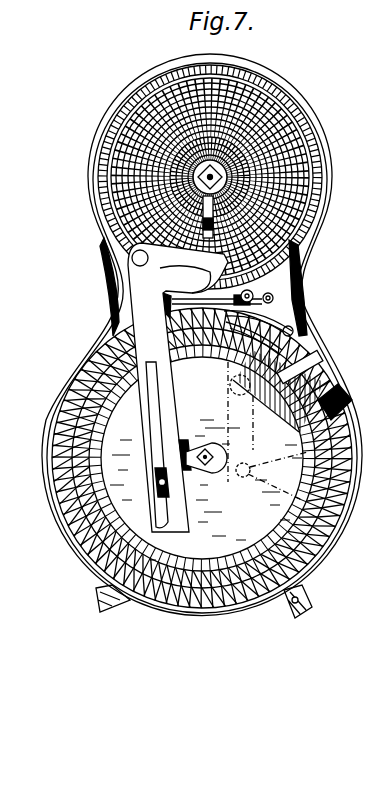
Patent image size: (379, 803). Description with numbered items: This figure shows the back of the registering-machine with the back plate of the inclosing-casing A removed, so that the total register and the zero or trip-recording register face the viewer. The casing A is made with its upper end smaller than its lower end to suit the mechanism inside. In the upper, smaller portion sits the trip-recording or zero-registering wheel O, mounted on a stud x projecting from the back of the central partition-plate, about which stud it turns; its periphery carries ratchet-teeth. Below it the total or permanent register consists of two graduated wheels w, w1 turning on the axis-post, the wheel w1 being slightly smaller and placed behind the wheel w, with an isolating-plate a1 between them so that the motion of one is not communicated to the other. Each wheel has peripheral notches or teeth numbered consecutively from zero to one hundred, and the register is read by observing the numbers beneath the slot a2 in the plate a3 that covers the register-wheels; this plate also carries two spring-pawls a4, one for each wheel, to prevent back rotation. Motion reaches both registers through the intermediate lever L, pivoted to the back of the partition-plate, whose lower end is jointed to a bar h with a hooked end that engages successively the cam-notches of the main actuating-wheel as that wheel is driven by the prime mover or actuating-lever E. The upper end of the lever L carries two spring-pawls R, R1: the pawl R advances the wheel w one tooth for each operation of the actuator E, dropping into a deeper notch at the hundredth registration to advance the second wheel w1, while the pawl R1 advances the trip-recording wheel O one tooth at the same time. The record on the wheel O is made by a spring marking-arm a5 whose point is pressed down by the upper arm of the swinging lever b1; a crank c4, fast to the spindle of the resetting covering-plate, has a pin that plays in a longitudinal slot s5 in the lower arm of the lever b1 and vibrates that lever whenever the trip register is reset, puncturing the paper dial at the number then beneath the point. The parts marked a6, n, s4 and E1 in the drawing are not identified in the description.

The trip-recording wheel O is at (202, 335).
The inclosing-casing A is at (202, 338).
The toothed ring a6 is at (205, 200).
The stud x is at (210, 177).
The graduated wheel w is at (201, 457).
The graduated wheel w1 is at (202, 458).
The slot a2 is at (276, 390).
The isolating-plate a1 is at (346, 402).
The pin n is at (313, 394).
The plate a3 is at (300, 355).
The intermediate lever L is at (240, 422).
The bar h is at (272, 476).
The spring-pawl R is at (157, 289).
The spring-pawl R1 is at (273, 301).
The spring-pawls a4 is at (276, 332).
The swinging lever b1 is at (178, 387).
The spring marking-arm a5 is at (185, 279).
The longitudinal slot s5 is at (177, 445).
The crank c4 is at (199, 468).
The pointer s4 is at (206, 448).
The left foot E1 is at (117, 605).
The prime mover E is at (303, 604).